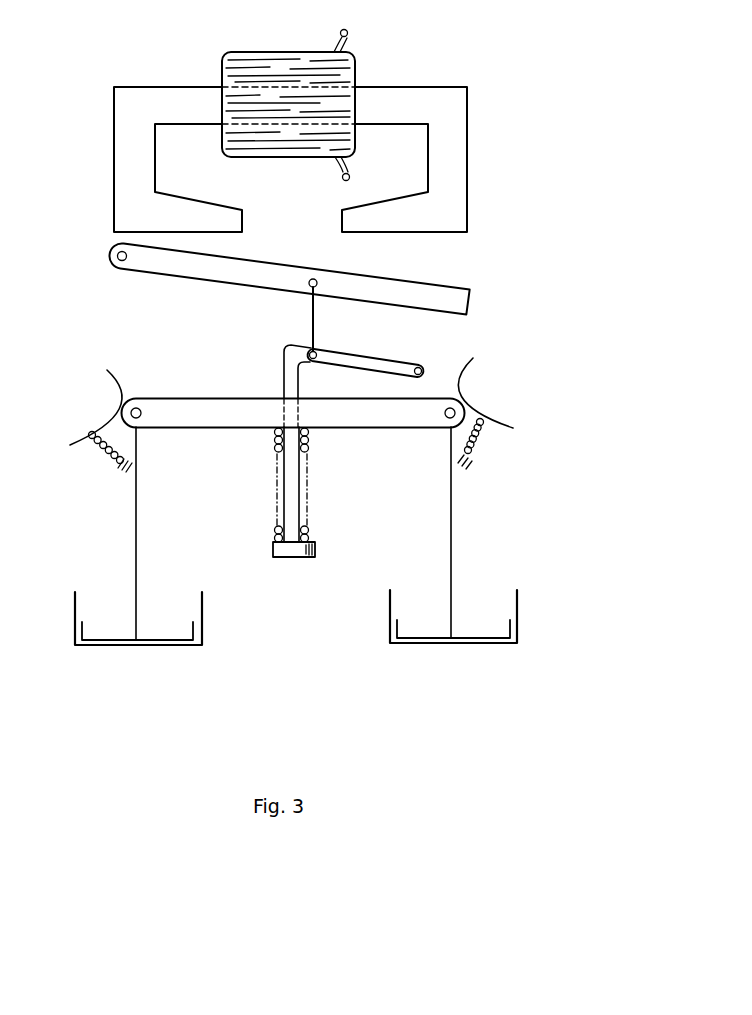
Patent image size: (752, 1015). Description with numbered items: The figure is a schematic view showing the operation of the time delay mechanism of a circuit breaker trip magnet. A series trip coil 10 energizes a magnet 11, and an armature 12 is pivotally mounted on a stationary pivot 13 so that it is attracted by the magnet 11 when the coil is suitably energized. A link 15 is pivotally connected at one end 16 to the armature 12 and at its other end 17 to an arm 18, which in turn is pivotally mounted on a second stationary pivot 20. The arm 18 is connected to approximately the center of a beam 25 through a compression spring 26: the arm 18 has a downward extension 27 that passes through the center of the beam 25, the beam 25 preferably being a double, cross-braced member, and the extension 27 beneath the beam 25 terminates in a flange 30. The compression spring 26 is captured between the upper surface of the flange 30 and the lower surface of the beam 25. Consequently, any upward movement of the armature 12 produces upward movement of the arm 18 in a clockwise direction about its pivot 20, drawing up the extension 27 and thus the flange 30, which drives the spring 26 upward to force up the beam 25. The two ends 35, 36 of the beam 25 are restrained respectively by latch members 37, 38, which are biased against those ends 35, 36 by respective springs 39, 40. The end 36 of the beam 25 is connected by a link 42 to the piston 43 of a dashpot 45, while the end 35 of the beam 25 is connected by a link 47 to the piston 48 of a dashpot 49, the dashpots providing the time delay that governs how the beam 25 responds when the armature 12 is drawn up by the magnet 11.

The series trip coil 10 is at (355, 57).
The magnet 11 is at (420, 91).
The armature 12 is at (442, 309).
The stationary pivot 13 is at (119, 260).
The link 15 is at (316, 325).
The one end 16 is at (310, 280).
The other end 17 is at (315, 359).
The arm 18 is at (365, 362).
The stationary pivot 20 is at (421, 369).
The beam 25 is at (205, 408).
The compression spring 26 is at (276, 452).
The downward extension 27 is at (287, 386).
The flange 30 is at (285, 558).
The end of the beam 35 is at (134, 400).
The end of the beam 36 is at (442, 420).
The latch member 37 is at (112, 383).
The latch member 38 is at (462, 382).
The spring 39 is at (102, 450).
The spring 40 is at (487, 443).
The link 42 is at (455, 520).
The piston 43 is at (467, 637).
The dashpot 45 is at (518, 628).
The link 47 is at (140, 525).
The piston 48 is at (120, 638).
The dashpot 49 is at (157, 647).